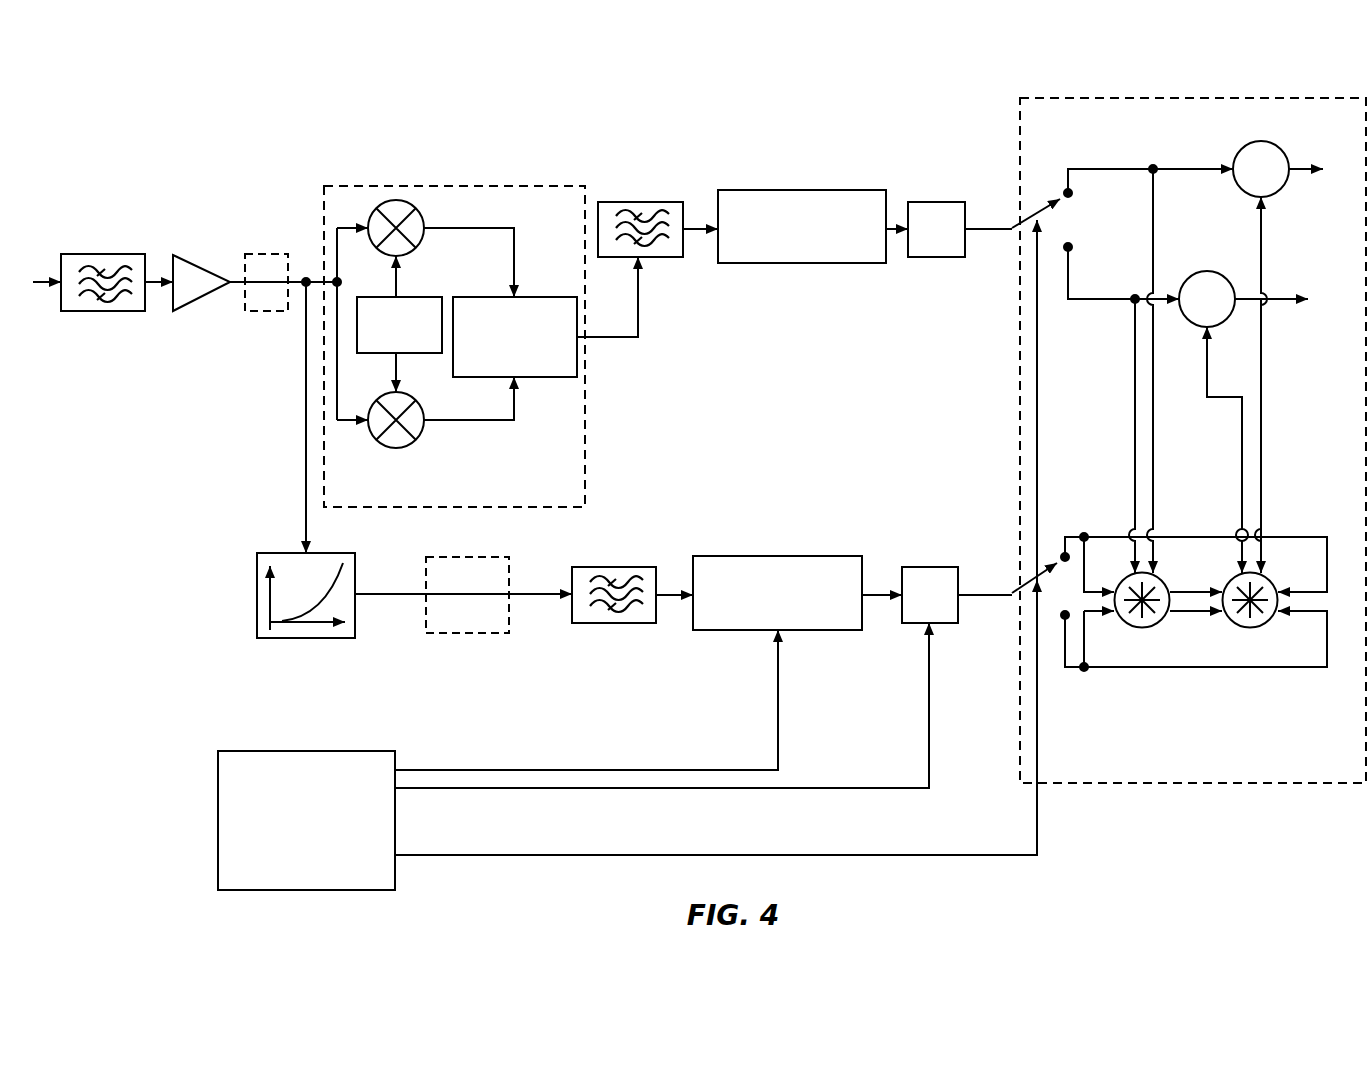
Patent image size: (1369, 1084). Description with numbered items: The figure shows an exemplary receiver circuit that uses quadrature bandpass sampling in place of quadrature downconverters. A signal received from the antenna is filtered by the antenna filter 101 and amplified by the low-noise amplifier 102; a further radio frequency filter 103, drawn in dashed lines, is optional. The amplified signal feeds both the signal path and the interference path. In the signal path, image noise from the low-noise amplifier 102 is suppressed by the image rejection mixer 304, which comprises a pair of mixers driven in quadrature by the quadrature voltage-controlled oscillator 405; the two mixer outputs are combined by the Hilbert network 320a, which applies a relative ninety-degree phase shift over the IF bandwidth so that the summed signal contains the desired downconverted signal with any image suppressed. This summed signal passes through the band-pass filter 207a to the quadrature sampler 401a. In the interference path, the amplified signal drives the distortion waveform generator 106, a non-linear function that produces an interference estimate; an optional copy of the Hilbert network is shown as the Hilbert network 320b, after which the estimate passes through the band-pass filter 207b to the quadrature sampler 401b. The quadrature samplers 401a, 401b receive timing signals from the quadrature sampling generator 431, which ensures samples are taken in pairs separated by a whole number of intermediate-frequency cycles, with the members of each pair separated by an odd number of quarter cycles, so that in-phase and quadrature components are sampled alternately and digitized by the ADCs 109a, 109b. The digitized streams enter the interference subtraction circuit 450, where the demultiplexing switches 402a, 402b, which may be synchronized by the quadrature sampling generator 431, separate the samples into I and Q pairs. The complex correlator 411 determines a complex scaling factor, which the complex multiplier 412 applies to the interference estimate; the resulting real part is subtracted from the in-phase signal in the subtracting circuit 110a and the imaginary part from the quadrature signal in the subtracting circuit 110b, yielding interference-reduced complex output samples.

The antenna filter 101 is at (118, 254).
The low-noise amplifier 102 is at (188, 258).
The radio frequency filter 103 is at (273, 312).
The image rejection mixer 304 is at (454, 346).
The quadrature voltage-controlled oscillator 405 is at (399, 324).
The Hilbert network 320a is at (515, 337).
The band-pass filter 207a is at (636, 202).
The quadrature sampler 401a is at (825, 190).
The ADC 109a is at (925, 202).
The demultiplexing switch 402a is at (1040, 210).
The subtracting circuit 110a is at (1273, 143).
The subtracting circuit 110b is at (1226, 273).
The demultiplexing switch 402b is at (1043, 563).
The complex correlator 411 is at (1163, 577).
The complex multiplier 412 is at (1268, 575).
The interference subtraction circuit 450 is at (1189, 440).
The distortion waveform generator 106 is at (307, 643).
The Hilbert network 320b is at (497, 633).
The band-pass filter 207b is at (592, 567).
The quadrature sampler 401b is at (800, 556).
The ADC 109b is at (920, 567).
The quadrature sampling generator 431 is at (306, 820).